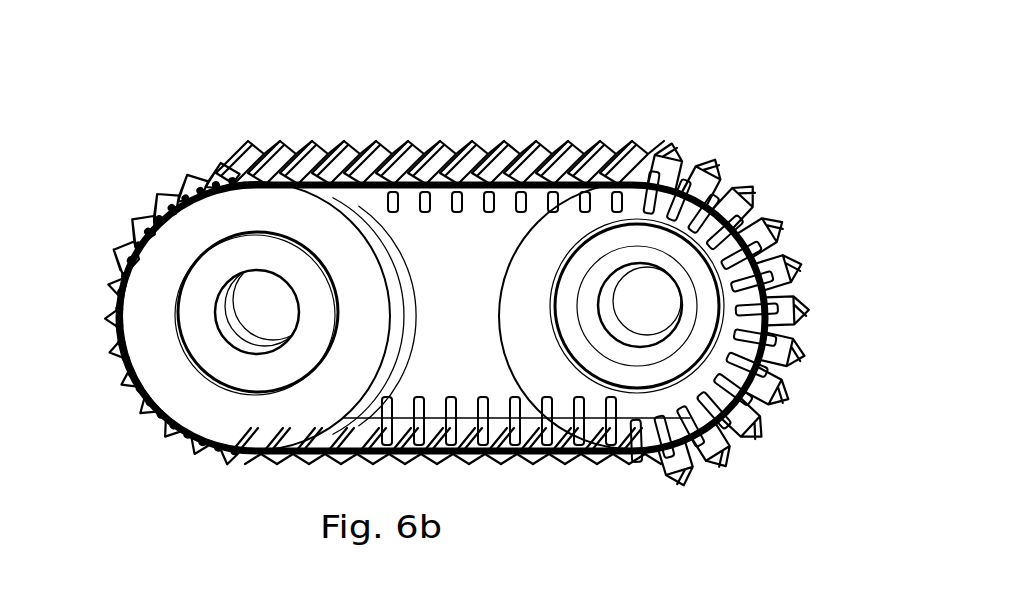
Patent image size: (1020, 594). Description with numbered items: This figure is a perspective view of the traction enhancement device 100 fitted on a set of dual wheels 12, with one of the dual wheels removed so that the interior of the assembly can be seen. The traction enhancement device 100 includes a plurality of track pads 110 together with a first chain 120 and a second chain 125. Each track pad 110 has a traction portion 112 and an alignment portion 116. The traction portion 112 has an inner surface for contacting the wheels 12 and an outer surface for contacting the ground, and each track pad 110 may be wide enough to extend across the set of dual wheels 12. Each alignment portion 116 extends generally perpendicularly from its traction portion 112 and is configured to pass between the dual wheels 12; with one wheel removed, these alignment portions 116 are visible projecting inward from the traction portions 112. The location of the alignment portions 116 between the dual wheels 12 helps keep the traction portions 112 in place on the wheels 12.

The traction enhancement device 100 is at (500, 310).
The wheels 12 is at (413, 237).
The track pad 110 is at (807, 263).
The traction portion 112 is at (740, 182).
The alignment portion 116 is at (360, 186).
The first chain 120 is at (597, 468).
The second chain 125 is at (533, 466).